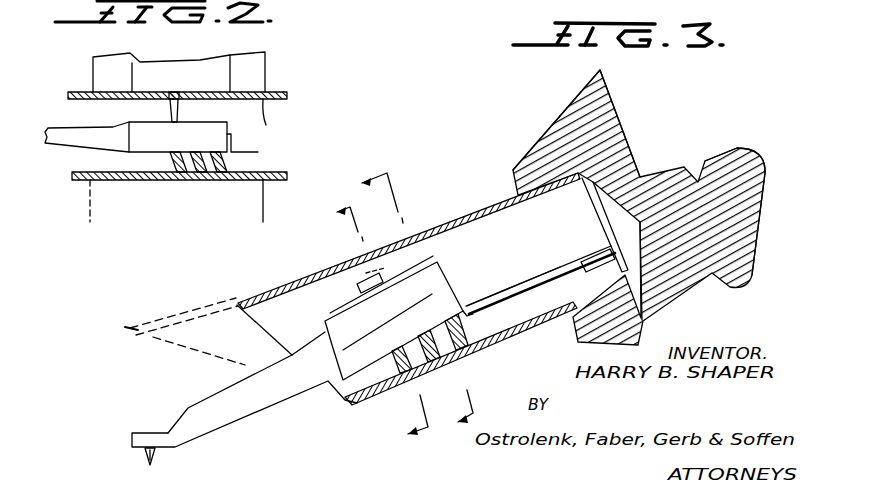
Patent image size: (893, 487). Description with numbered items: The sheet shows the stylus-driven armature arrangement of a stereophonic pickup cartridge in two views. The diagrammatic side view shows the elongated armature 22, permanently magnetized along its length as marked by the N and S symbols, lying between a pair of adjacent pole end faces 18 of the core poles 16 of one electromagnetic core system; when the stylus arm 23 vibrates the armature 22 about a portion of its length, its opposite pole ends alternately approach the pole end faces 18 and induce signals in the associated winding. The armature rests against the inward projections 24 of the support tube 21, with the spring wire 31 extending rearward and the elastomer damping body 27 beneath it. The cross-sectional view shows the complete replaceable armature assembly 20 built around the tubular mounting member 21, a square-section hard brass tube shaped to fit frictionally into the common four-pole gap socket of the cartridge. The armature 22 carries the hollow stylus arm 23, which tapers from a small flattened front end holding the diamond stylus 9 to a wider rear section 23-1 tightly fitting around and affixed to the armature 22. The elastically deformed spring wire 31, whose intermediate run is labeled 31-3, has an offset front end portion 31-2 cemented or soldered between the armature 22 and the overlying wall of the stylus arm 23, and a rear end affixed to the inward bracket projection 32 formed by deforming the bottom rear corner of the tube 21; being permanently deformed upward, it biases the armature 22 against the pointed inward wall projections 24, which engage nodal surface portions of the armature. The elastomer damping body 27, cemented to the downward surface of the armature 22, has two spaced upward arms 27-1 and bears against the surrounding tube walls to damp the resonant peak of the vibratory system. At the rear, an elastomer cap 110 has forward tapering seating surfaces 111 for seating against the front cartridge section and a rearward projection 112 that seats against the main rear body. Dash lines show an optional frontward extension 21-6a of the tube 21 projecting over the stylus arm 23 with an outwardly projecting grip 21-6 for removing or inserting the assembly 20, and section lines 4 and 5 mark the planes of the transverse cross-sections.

In FIG. 3, the stylus 9 is at (143, 453).
In FIG. 2, the core poles 16 is at (267, 70).
In FIG. 2, the pole end faces 18 is at (250, 172).
In FIG. 3, the replaceable armature assembly 20 is at (417, 198).
In FIG. 2, the tubular mounting member 21 is at (77, 92).
In FIG. 3, the tubular mounting member 21 is at (343, 262).
In FIG. 3, the outwardly projecting grip 21-6 is at (135, 328).
In FIG. 3, the frontward extension 21-6a is at (214, 310).
In FIG. 2, the armature 22 is at (192, 132).
In FIG. 3, the armature 22 is at (433, 287).
In FIG. 2, the stylus arm 23 is at (63, 128).
In FIG. 3, the stylus arm 23 is at (233, 428).
In FIG. 3, the wider rear section 23-1 is at (412, 270).
In FIG. 2, the inward wall projections 24 is at (170, 108).
In FIG. 3, the inward wall projections 24 is at (357, 283).
In FIG. 2, the elastomer damping body 27 is at (168, 160).
In FIG. 3, the elastomer damping body 27 is at (423, 380).
In FIG. 3, the upward arms 27-1 is at (466, 340).
In FIG. 2, the spring wire member 31 is at (243, 139).
In FIG. 3, the spring wire member 31 is at (543, 293).
In FIG. 3, the offset end portion 31-2 is at (387, 325).
In FIG. 3, the bracket top portion 31-3 is at (513, 286).
In FIG. 3, the inward bracket projection 32 is at (596, 259).
In FIG. 3, the cap 110 is at (639, 207).
In FIG. 3, the forward tapering seating surfaces 111 is at (568, 123).
In FIG. 3, the rearward projection 112 is at (757, 211).
In FIG. 3, the section line 4- 4 is at (371, 328).
In FIG. 3, the section line 5- 5 is at (406, 307).